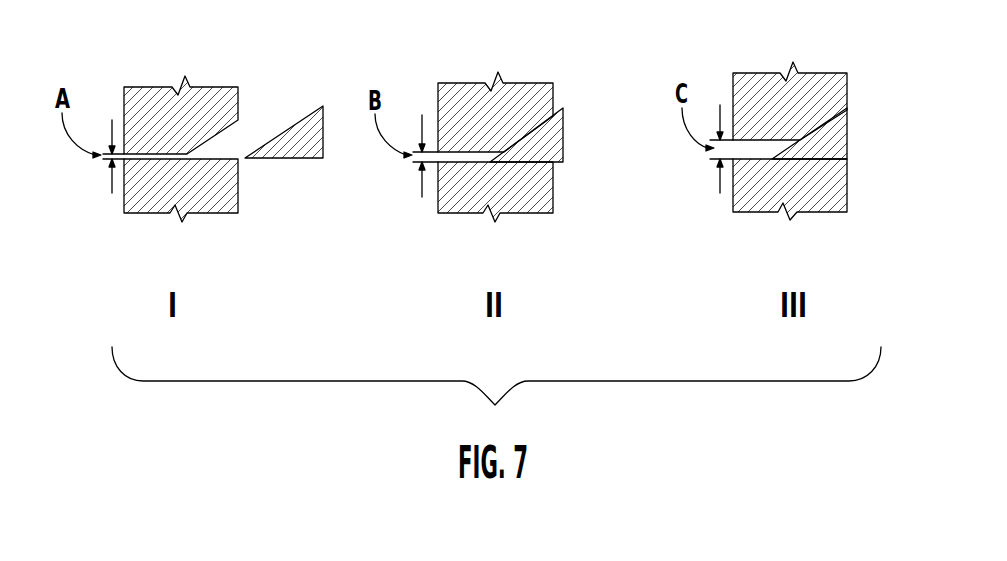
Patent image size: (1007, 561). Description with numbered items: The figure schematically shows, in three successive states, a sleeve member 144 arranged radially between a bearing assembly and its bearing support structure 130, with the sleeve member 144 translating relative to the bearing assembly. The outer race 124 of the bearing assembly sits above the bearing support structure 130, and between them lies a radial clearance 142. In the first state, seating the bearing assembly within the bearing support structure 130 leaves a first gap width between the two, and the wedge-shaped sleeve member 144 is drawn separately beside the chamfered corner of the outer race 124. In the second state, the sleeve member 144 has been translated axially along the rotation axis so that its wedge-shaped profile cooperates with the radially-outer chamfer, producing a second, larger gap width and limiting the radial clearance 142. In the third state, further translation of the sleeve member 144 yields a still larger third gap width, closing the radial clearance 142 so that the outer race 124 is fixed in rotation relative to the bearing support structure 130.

The outer race 124 is at (155, 95).
The bearing support structure 130 is at (145, 183).
The radial clearance 142 is at (203, 152).
The sleeve member 144 is at (287, 120).